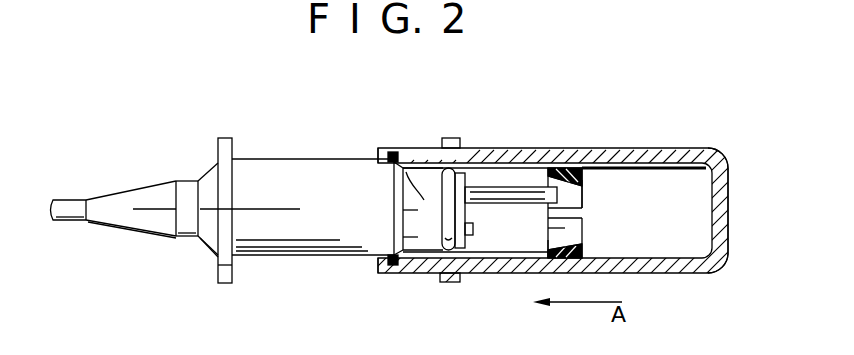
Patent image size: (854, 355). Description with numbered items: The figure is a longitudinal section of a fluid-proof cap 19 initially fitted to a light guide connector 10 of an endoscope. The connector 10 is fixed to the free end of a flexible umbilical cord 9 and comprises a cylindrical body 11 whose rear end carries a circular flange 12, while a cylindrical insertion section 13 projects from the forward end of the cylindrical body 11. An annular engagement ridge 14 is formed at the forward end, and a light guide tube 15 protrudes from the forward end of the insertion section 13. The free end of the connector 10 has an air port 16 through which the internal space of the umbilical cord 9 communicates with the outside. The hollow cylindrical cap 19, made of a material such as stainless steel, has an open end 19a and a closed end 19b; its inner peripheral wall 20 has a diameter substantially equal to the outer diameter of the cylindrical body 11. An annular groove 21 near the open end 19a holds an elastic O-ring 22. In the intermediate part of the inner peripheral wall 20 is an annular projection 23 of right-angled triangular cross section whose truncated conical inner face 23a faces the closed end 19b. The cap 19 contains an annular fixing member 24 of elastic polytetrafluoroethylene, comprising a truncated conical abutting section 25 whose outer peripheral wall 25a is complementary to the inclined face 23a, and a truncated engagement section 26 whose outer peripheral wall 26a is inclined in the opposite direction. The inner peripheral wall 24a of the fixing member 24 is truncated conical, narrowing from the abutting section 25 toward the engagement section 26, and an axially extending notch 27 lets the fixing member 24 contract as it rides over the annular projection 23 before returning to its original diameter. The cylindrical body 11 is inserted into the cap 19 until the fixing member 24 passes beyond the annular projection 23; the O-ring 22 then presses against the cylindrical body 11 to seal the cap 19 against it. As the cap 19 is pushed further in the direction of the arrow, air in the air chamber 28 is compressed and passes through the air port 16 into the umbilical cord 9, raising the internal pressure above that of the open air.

The umbilical cord 9 is at (70, 202).
The connector 10 is at (290, 150).
The cylindrical body 11 is at (283, 247).
The circular flange 12 is at (221, 284).
The cylindrical insertion section 13 is at (413, 198).
The annular engagement ridge 14 is at (438, 260).
The light guide tube 15 is at (510, 190).
The air port 16 is at (477, 236).
The fluid-proof cap 19 is at (687, 157).
The open end 19a is at (378, 262).
The closed end 19b is at (720, 233).
The inner peripheral wall 20 is at (470, 148).
The annular groove 21 is at (393, 151).
The O-ring 22 is at (392, 267).
The annular projection 23 is at (552, 259).
The truncated conical inner face 23a is at (550, 250).
The annular fixing member 24 is at (577, 171).
The inner peripheral wall 24a is at (584, 186).
The truncated conical abutting section 25 is at (565, 171).
The outer peripheral wall 25a is at (556, 169).
The truncated engagement section 26 is at (583, 247).
The outer peripheral wall 26a is at (583, 257).
The axially extending notch 27 is at (547, 214).
The air chamber 28 is at (690, 201).